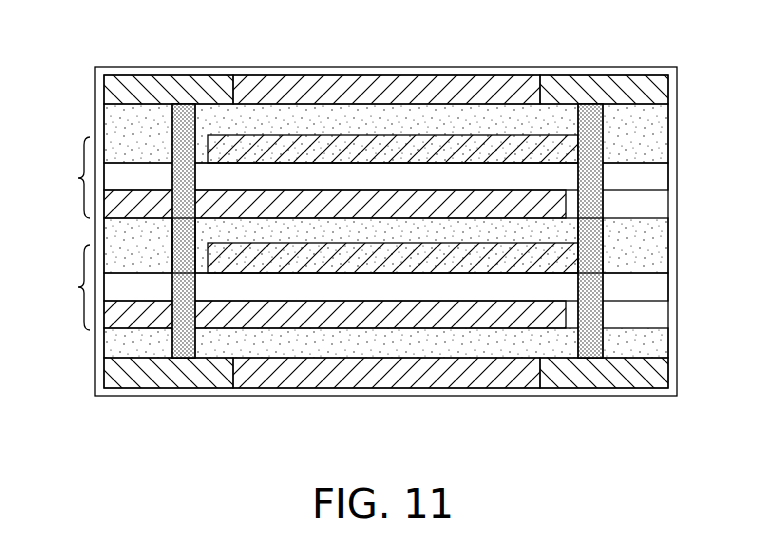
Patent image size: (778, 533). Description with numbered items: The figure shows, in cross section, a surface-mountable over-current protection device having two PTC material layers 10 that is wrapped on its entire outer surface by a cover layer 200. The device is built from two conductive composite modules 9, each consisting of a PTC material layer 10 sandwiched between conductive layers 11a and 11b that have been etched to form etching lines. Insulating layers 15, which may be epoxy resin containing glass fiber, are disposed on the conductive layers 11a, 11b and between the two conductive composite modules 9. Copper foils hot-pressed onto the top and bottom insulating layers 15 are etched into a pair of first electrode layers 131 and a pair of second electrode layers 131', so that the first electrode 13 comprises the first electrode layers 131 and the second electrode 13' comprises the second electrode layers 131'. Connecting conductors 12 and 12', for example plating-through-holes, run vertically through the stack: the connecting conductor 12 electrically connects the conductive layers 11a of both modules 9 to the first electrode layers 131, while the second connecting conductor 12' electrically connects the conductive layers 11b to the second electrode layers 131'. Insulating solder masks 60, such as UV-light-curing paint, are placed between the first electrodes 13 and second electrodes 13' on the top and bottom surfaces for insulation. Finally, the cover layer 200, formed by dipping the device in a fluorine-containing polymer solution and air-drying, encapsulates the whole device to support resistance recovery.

The cover layer 200 is at (577, 72).
The insulating layer 15 is at (662, 118).
The PTC material layer 10 is at (662, 175).
The second electrode layer 131' is at (124, 230).
The first electrode layer 131 is at (647, 231).
The solder mask 60 is at (385, 92).
The conductive layer 11a is at (483, 150).
The conductive layer 11b is at (292, 203).
The second electrode 13' is at (168, 279).
The first electrode 13 is at (605, 279).
The second connecting conductor 12' is at (110, 245).
The connecting conductor 12 is at (663, 245).
The conductive composite module 9 is at (75, 233).